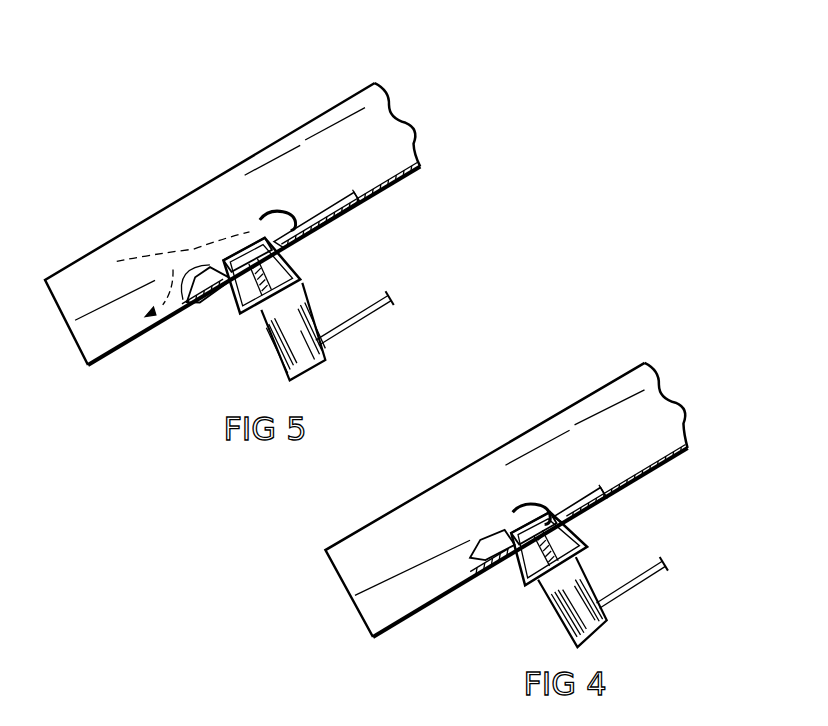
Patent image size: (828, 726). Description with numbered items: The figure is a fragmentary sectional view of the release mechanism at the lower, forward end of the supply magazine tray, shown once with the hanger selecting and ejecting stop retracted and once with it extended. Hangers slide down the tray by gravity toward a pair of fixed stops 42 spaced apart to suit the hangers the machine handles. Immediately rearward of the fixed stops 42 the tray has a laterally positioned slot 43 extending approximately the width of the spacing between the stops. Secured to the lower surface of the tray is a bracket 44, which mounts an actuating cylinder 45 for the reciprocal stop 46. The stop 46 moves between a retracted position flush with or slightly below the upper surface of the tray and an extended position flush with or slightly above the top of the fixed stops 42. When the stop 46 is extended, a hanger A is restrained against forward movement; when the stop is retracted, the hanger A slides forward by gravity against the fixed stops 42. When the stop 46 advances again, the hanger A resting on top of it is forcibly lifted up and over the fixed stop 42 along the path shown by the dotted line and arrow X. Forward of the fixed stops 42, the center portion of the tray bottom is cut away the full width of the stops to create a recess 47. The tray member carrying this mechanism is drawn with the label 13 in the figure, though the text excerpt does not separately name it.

In FIG. 5, the track rail plate 13 is at (308, 112).
In FIG. 4, the track rail plate 13 is at (516, 428).
In FIG. 5, the fixed stops 42 is at (190, 300).
In FIG. 4, the fixed stops 42 is at (496, 536).
In FIG. 5, the slot 43 is at (297, 262).
In FIG. 4, the slot 43 is at (555, 537).
In FIG. 5, the bracket 44 is at (238, 314).
In FIG. 4, the bracket 44 is at (585, 547).
In FIG. 5, the actuating cylinder 45 is at (302, 322).
In FIG. 4, the actuating cylinder 45 is at (590, 578).
In FIG. 5, the reciprocal stop 46 is at (250, 252).
In FIG. 4, the reciprocal stop 46 is at (525, 553).
In FIG. 5, the recess 47 is at (113, 353).
In FIG. 4, the recess 47 is at (408, 613).
In FIG. 5, the hanger A is at (277, 213).
In FIG. 4, the hanger A is at (553, 512).
In FIG. 5, the dotted line and arrow X is at (179, 257).